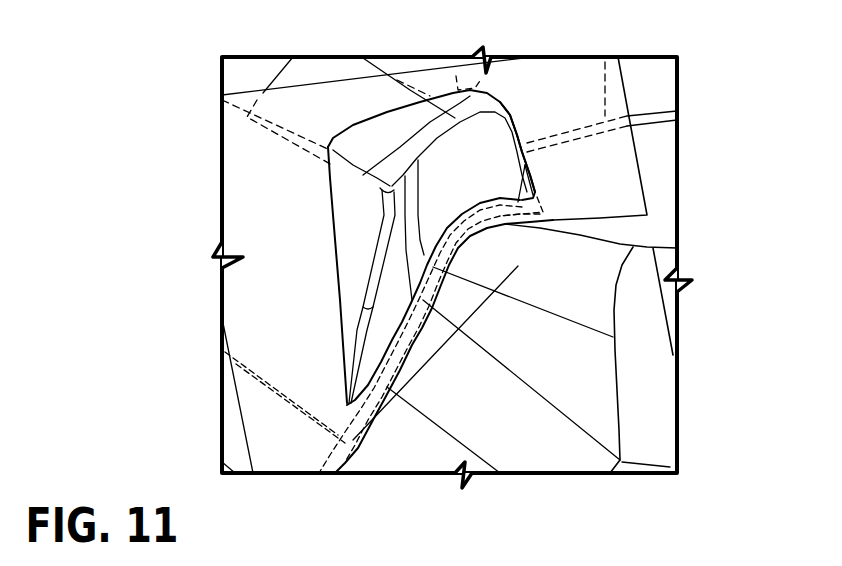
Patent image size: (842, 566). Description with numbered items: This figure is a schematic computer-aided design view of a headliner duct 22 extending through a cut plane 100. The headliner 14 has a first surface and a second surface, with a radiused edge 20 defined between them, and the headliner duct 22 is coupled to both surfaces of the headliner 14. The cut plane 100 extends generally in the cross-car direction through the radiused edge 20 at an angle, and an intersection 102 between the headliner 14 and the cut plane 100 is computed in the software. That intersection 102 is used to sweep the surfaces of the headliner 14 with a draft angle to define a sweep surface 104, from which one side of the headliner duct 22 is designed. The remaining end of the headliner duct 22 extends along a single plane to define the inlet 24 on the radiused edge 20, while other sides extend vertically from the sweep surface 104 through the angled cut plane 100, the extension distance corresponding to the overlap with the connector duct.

The headliner 14 is at (637, 265).
The radiused edge 20 is at (552, 366).
The headliner duct 22 is at (335, 239).
The inlet 24 is at (552, 104).
The cut plane 100 is at (493, 111).
The intersection 102 is at (384, 369).
The sweep surface 104 is at (446, 364).